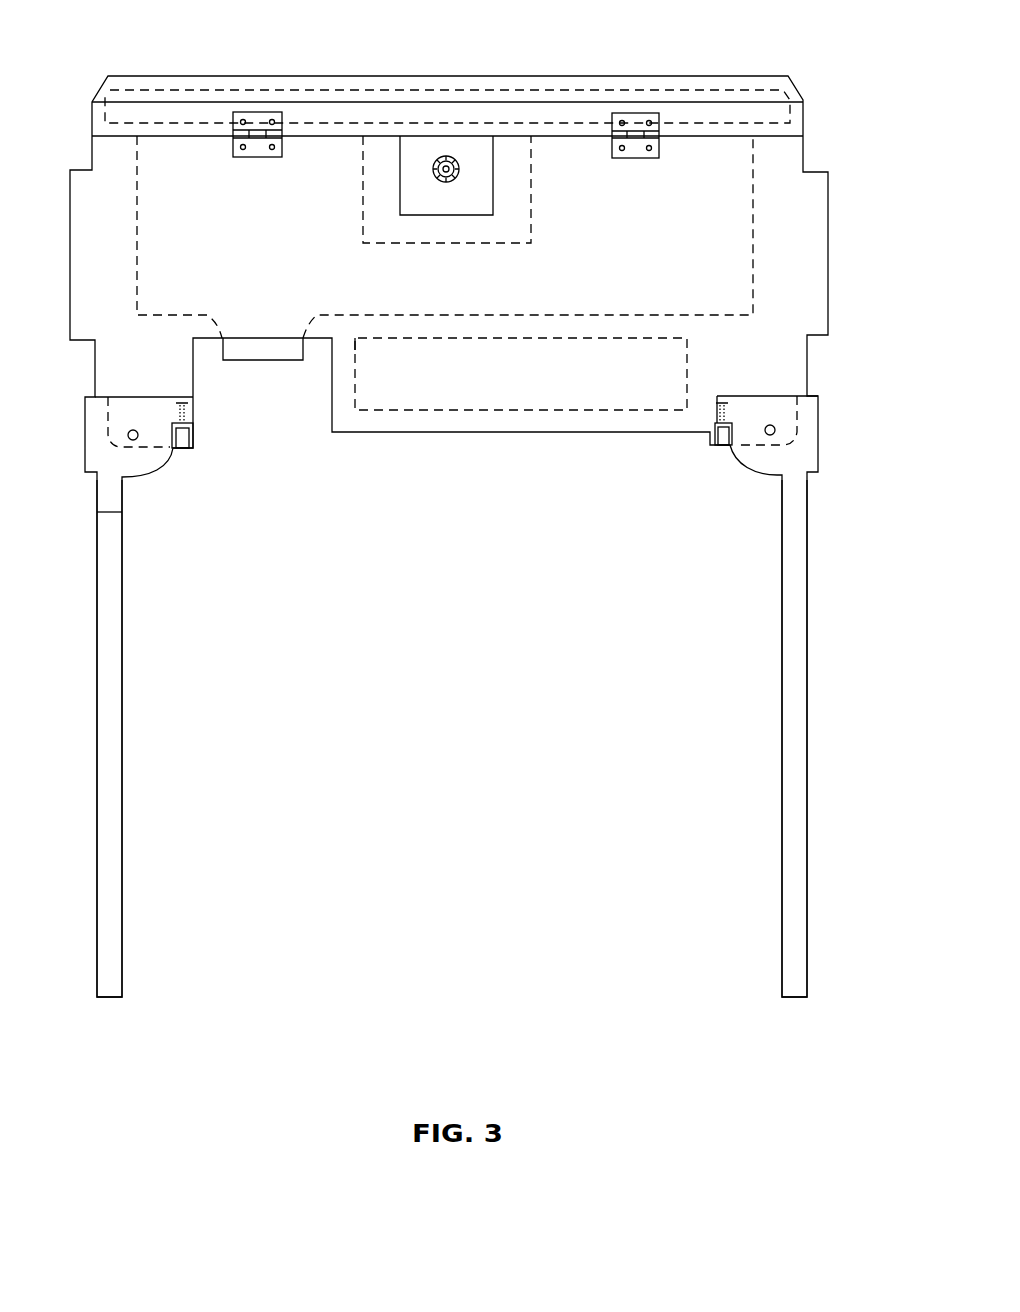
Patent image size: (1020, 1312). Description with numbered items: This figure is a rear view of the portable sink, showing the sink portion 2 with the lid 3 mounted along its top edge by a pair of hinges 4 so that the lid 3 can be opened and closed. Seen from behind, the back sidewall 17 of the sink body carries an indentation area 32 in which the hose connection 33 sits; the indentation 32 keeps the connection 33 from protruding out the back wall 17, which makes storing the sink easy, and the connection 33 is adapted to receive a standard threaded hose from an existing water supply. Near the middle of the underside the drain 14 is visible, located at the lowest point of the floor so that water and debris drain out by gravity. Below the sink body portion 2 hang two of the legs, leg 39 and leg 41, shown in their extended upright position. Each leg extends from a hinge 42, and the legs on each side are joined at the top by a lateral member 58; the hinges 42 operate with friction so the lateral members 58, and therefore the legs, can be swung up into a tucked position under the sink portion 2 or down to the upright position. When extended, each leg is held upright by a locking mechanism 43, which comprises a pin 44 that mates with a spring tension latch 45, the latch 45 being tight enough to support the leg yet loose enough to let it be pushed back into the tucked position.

The sink portion 2 is at (808, 247).
The lid 3 is at (818, 84).
The hinges 4 is at (273, 120).
The drain 14 is at (261, 353).
The sidewall 17 is at (592, 248).
The indentation area 32 is at (392, 229).
The hose connection 33 is at (457, 178).
The leg 39 is at (119, 778).
The leg 41 is at (809, 714).
The hinge 42 is at (135, 430).
The locking mechanism 43 is at (183, 438).
The pin 44 is at (188, 417).
The spring tension latch 45 is at (180, 403).
The lateral member 58 is at (806, 438).